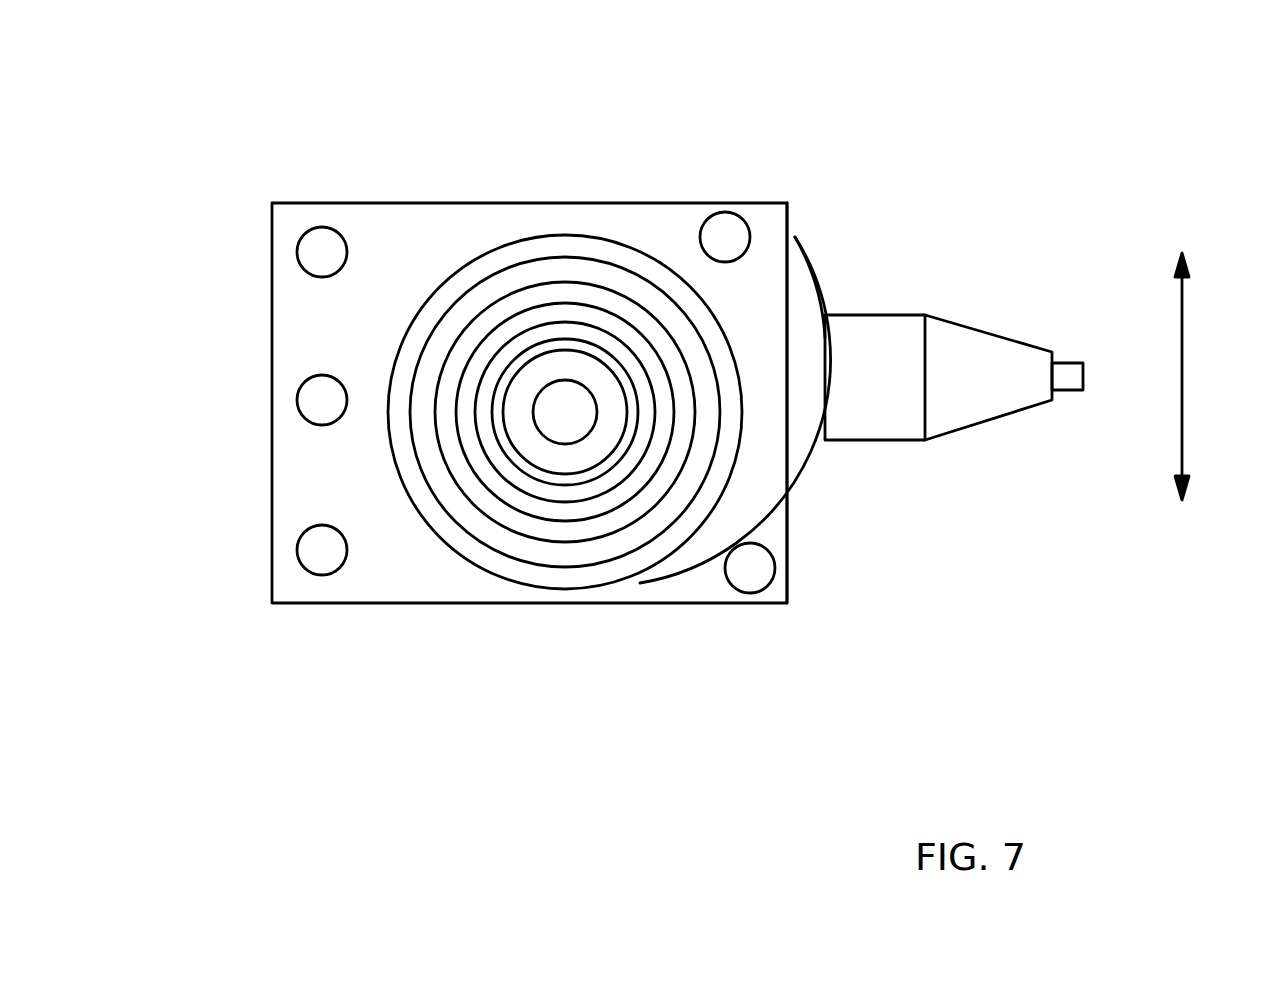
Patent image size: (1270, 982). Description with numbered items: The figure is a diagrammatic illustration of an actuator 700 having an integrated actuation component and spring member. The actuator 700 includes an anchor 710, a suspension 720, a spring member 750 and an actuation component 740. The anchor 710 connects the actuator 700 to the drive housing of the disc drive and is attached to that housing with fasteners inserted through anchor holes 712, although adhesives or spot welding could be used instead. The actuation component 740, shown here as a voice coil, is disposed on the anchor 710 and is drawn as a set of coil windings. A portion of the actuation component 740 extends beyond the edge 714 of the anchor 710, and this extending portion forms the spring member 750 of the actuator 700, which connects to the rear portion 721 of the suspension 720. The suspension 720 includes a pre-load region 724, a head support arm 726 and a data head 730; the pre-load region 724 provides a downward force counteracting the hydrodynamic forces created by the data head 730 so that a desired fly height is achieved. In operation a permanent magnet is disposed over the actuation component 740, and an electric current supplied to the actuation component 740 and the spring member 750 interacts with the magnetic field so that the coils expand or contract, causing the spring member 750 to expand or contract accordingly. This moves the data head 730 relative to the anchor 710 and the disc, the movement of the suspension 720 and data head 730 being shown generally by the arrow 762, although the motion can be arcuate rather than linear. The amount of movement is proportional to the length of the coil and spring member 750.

The actuator 700 is at (667, 88).
The anchor 710 is at (463, 213).
The anchor holes 712 is at (322, 550).
The edge of anchor 714 is at (787, 490).
The suspension 720 is at (1003, 394).
The rear portion of suspension 721 is at (795, 237).
The pre-load region 724 is at (878, 338).
The head support arm 726 is at (988, 342).
The data head 730 is at (1083, 378).
The actuation component 740 is at (542, 502).
The spring member 750 is at (803, 467).
The arrow 762 is at (1182, 360).